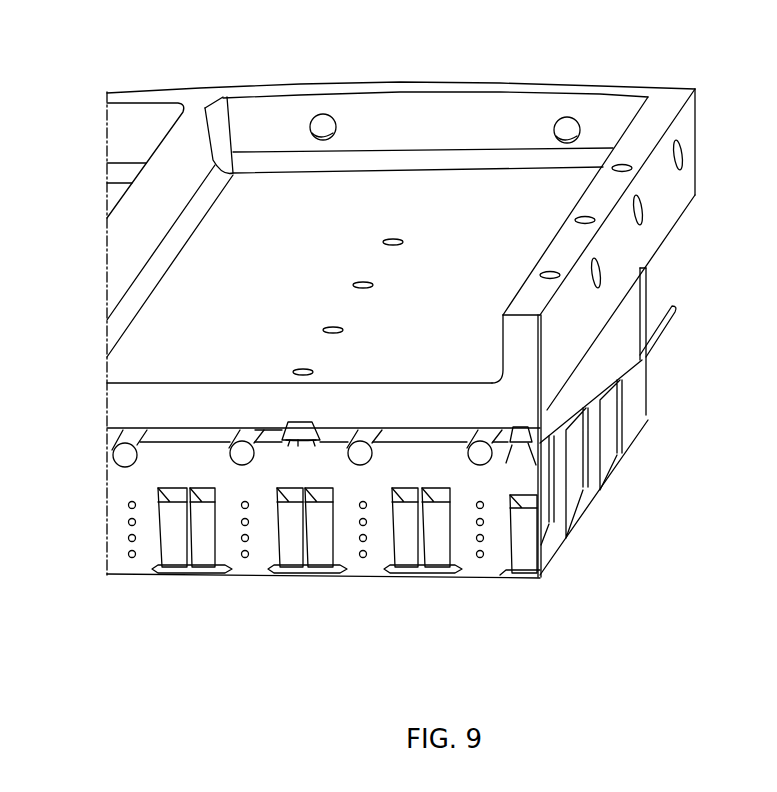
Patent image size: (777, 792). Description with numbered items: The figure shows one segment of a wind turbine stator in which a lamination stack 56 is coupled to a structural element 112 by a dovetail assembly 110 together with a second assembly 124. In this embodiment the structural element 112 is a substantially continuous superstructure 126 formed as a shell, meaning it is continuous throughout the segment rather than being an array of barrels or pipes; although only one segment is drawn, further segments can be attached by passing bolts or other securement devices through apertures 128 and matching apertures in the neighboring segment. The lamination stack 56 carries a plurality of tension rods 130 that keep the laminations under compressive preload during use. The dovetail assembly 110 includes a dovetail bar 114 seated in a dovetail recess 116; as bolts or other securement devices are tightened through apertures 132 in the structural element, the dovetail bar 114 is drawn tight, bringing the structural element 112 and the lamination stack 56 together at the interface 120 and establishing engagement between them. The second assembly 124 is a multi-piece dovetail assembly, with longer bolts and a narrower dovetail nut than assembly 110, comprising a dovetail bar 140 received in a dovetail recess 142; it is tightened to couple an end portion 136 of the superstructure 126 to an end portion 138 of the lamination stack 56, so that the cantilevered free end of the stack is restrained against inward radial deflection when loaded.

The lamination stack 56 is at (350, 572).
The dovetail assembly 110 is at (320, 412).
The structural element 112 is at (668, 105).
The dovetail bar 114 is at (297, 440).
The dovetail recess 116 is at (313, 437).
The interface 120 is at (268, 420).
The second assembly 124 is at (504, 414).
The substantially continuous superstructure 126 is at (449, 73).
The apertures 128 is at (553, 318).
The tension rods 130 is at (128, 468).
The apertures 132 is at (363, 280).
The end portion 136 is at (550, 398).
The end portion 138 is at (556, 437).
The dovetail bar 140 is at (508, 466).
The dovetail recess 142 is at (558, 512).